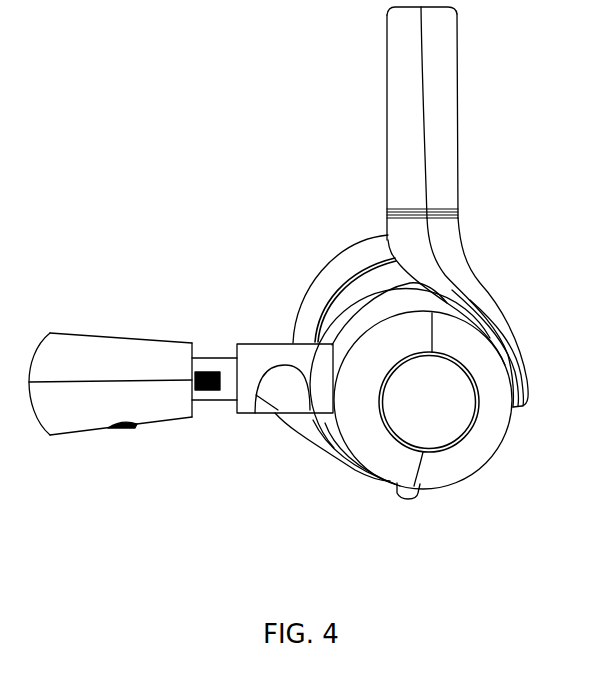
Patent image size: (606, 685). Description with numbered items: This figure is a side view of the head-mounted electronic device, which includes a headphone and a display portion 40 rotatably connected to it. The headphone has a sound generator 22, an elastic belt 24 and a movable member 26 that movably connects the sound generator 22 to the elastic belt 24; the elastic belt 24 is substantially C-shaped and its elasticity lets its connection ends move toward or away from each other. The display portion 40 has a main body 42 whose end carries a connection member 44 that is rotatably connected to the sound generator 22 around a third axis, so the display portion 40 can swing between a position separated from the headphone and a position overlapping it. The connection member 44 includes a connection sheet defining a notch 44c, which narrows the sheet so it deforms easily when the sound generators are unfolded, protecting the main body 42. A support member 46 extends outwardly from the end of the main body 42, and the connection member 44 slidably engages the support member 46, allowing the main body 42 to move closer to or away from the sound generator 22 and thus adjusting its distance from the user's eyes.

The sound generator 22 is at (450, 417).
The elastic belt 24 is at (430, 123).
The movable member 26 is at (452, 287).
The display portion 40 is at (182, 401).
The main body 42 is at (63, 353).
The connection member 44 is at (286, 401).
The notch 44c is at (262, 388).
The support member 46 is at (220, 400).